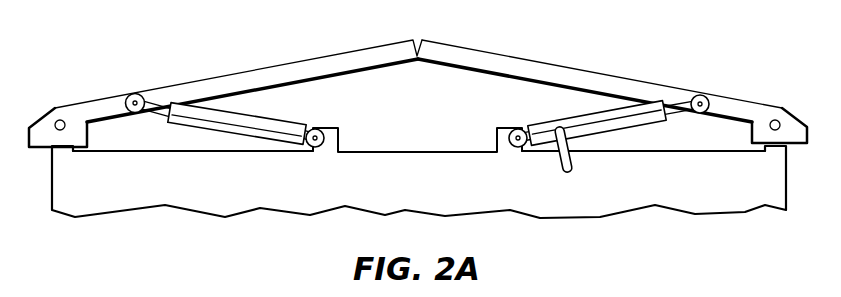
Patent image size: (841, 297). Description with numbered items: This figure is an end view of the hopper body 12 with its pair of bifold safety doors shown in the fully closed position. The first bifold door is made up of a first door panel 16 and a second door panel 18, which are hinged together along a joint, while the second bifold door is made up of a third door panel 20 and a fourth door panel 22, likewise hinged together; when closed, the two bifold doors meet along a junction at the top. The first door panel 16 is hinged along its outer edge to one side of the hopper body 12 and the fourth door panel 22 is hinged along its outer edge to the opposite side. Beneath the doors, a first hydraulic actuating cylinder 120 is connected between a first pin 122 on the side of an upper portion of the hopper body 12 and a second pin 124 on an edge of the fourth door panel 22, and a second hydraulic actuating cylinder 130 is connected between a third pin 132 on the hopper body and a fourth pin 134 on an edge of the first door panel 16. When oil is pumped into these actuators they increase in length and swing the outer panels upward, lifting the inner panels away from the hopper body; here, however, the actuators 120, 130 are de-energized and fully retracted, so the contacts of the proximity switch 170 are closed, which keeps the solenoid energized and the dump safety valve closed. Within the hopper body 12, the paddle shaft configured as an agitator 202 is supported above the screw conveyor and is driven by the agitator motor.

The hopper body 12 is at (112, 196).
The first door panel 16 is at (93, 107).
The second door panel 18 is at (310, 65).
The third door panel 20 is at (527, 63).
The fourth door panel 22 is at (742, 105).
The agitator 202 is at (437, 117).
The second hydraulic actuating cylinder 130 is at (232, 122).
The fourth pin 134 is at (135, 98).
The third pin 132 is at (317, 146).
The first hydraulic actuating cylinder 120 is at (638, 113).
The second pin 124 is at (697, 100).
The first pin 122 is at (519, 147).
The proximity switch 170 is at (571, 163).